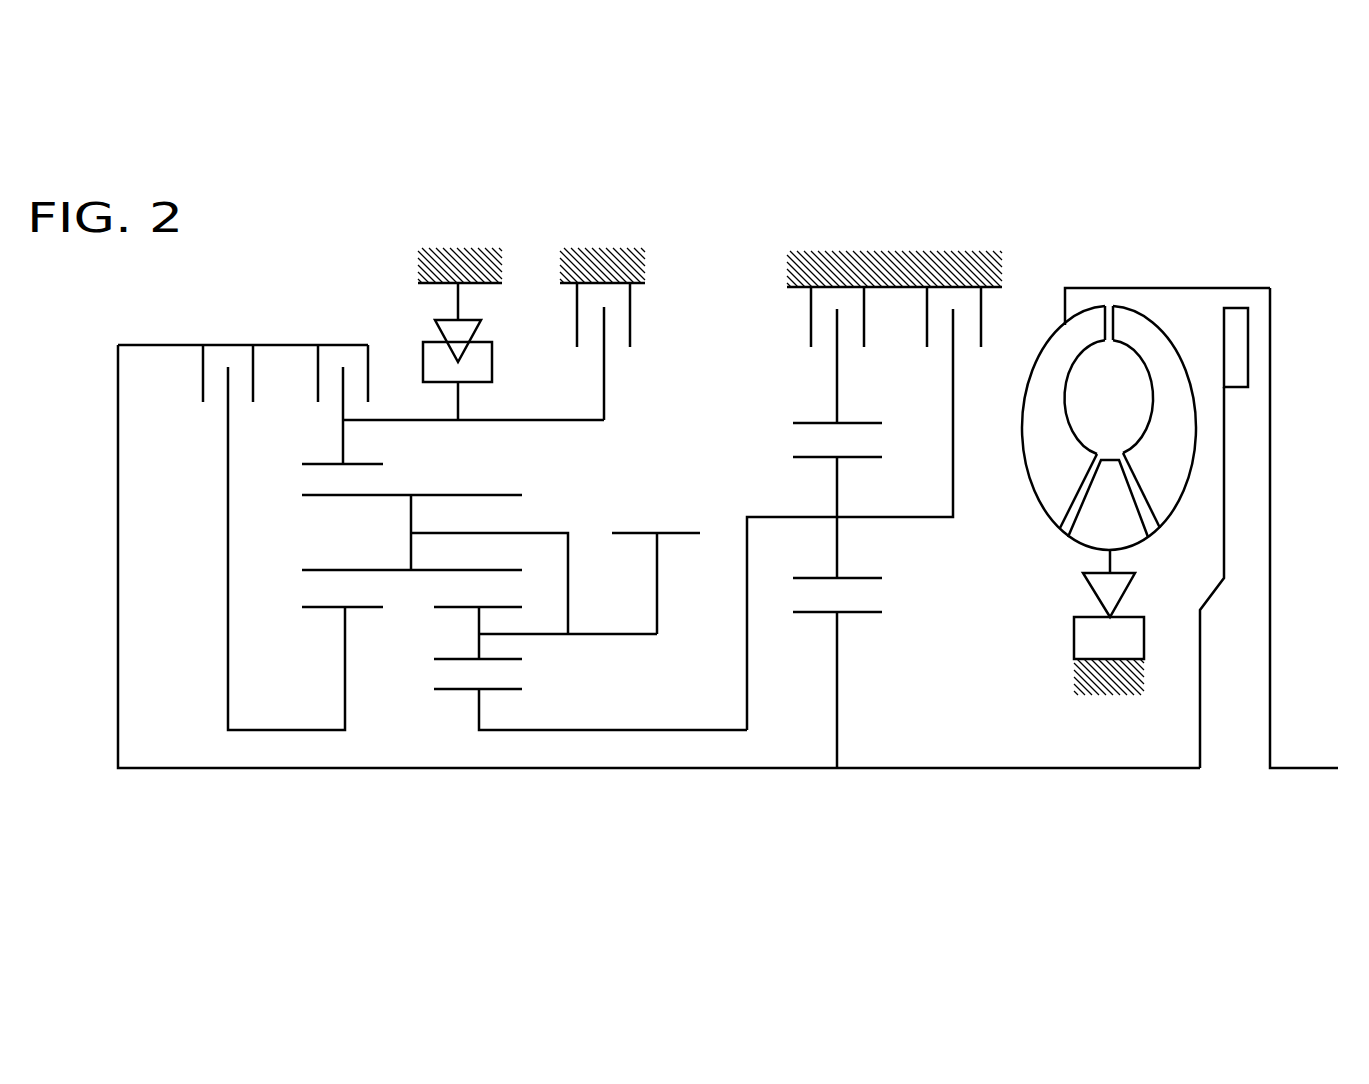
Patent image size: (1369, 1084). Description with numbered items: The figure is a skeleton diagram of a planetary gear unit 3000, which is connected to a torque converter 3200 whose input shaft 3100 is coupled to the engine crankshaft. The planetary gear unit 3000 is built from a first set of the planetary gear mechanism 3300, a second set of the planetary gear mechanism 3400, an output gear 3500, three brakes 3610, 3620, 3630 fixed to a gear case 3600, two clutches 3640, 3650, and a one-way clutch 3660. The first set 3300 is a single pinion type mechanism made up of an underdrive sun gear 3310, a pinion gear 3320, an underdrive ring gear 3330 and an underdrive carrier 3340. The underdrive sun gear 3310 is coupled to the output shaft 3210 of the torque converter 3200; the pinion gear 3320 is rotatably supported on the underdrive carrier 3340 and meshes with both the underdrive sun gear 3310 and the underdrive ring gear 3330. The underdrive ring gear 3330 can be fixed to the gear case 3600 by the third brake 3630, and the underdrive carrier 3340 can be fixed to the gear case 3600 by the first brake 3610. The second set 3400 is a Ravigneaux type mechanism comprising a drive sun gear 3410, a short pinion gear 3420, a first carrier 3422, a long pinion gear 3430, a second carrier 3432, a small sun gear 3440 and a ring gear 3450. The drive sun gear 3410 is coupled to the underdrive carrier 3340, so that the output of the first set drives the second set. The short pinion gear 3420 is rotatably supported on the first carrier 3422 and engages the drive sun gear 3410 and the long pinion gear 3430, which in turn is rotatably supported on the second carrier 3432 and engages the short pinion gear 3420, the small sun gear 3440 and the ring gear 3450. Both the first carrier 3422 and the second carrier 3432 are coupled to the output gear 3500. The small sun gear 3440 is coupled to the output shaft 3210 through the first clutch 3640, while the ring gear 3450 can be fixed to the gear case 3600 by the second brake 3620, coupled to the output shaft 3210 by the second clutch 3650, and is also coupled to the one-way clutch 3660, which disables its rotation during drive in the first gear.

The planetary gear unit 3000 is at (734, 154).
The input shaft 3100 is at (1300, 770).
The torque converter 3200 is at (1140, 262).
The output shaft 3210 is at (978, 768).
The first set of the planetary gear mechanism 3300 is at (887, 597).
The sun gear S (UD) 3310 is at (853, 658).
The pinion gear 3320 is at (867, 567).
The ring gear R (UD) 3330 is at (848, 412).
The carrier C (UD) 3340 is at (955, 480).
The second set of the planetary gear mechanism 3400 is at (487, 626).
The sun gear S (D) 3410 is at (533, 688).
The short pinion gear 3420 is at (433, 617).
The carrier C (1) 3422 is at (545, 635).
The long pinion gear 3430 is at (522, 490).
The carrier C (2) 3432 is at (500, 532).
The sun gear S (S) 3440 is at (323, 613).
The ring gear R (1) (R (2)) 3450 is at (372, 443).
The output gear 3500 is at (682, 523).
The gear case 3600 is at (458, 246).
The B1 brake 3610 is at (972, 353).
The B2 brake 3620 is at (622, 353).
The B3 brake 3630 is at (808, 353).
The C1 clutch 3640 is at (198, 386).
The C2 clutch 3650 is at (313, 386).
The one-way clutch F 3660 is at (420, 327).